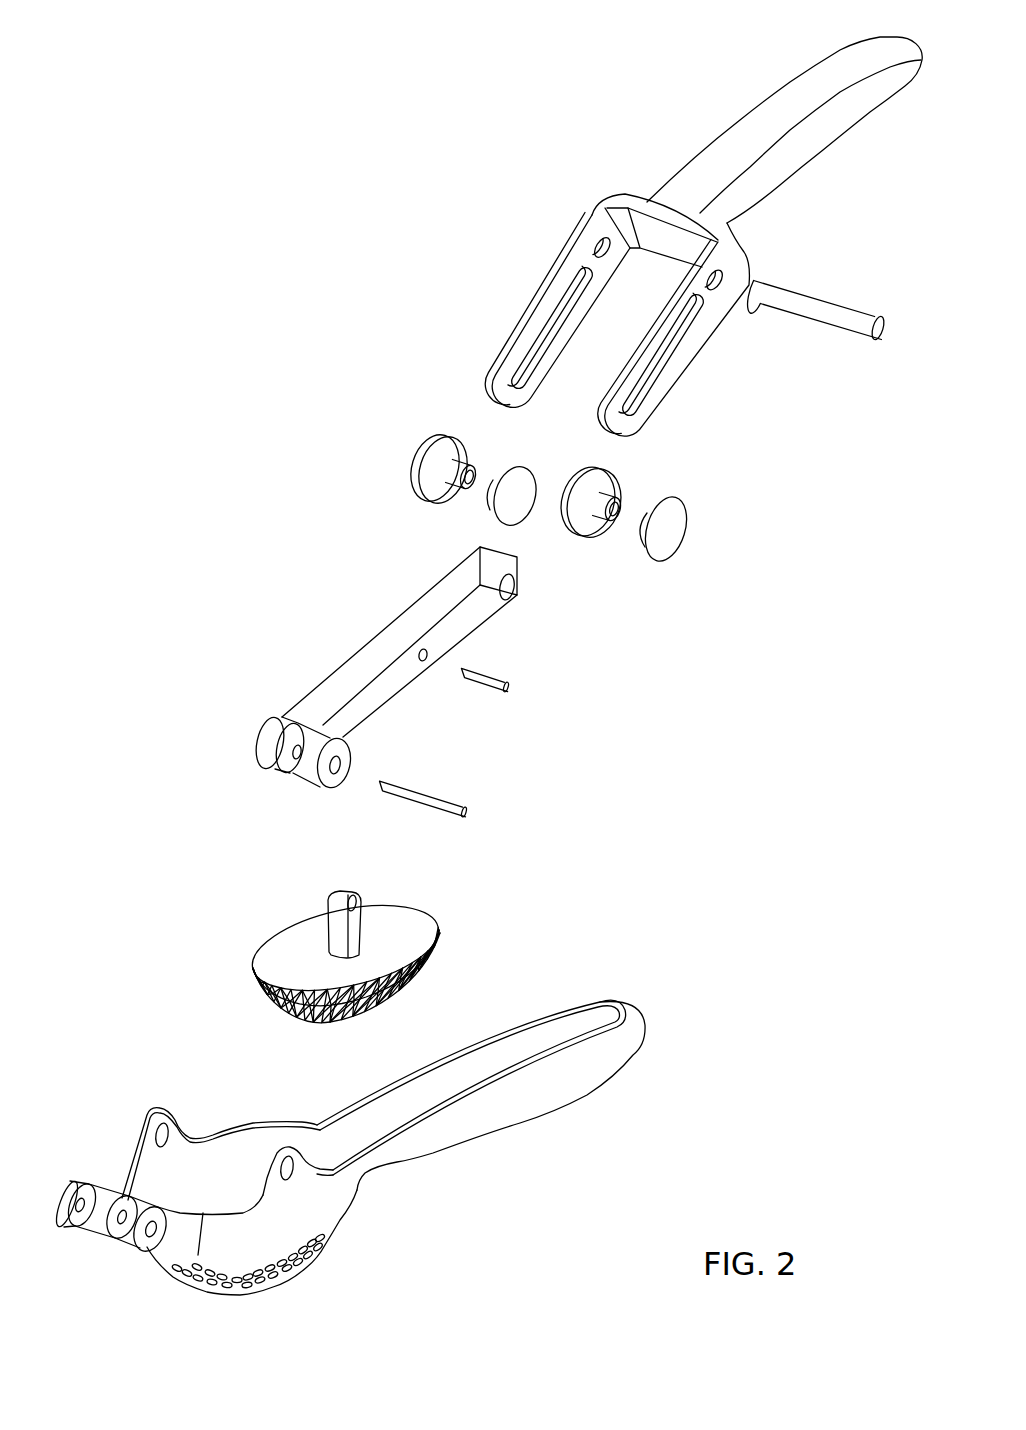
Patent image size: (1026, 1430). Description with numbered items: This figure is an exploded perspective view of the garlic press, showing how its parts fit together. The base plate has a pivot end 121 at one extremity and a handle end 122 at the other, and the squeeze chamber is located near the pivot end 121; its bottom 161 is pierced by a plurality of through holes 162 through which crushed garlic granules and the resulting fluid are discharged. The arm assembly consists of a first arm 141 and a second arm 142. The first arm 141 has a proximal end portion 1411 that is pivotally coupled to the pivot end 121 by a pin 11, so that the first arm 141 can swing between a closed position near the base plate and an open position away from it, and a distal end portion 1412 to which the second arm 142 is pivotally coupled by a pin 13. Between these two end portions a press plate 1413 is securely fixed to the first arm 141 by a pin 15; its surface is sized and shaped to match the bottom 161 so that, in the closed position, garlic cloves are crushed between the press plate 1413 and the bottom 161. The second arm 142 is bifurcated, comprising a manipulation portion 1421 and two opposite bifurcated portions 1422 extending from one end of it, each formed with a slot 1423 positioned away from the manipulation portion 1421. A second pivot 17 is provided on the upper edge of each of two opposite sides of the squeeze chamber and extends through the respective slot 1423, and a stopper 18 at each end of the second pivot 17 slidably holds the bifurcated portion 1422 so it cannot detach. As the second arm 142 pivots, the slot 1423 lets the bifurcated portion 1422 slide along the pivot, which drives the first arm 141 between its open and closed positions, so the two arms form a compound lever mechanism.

The pin 11 is at (433, 803).
The pin 13 is at (840, 320).
The pin 15 is at (488, 678).
The second pivot 17 is at (453, 463).
The stopper 18 is at (443, 482).
The pivot end 121 is at (177, 1240).
The handle end 122 is at (627, 1030).
The first arm 141 is at (355, 663).
The proximal end portion 1411 is at (295, 708).
The distal end portion 1412 is at (485, 562).
The press plate 1413 is at (290, 962).
The second arm 142 is at (658, 227).
The manipulation portion 1421 is at (777, 117).
The bifurcated portion 1422 is at (533, 317).
The slot 1423 is at (568, 282).
The bottom 161 is at (340, 1215).
The through holes 162 is at (257, 1290).